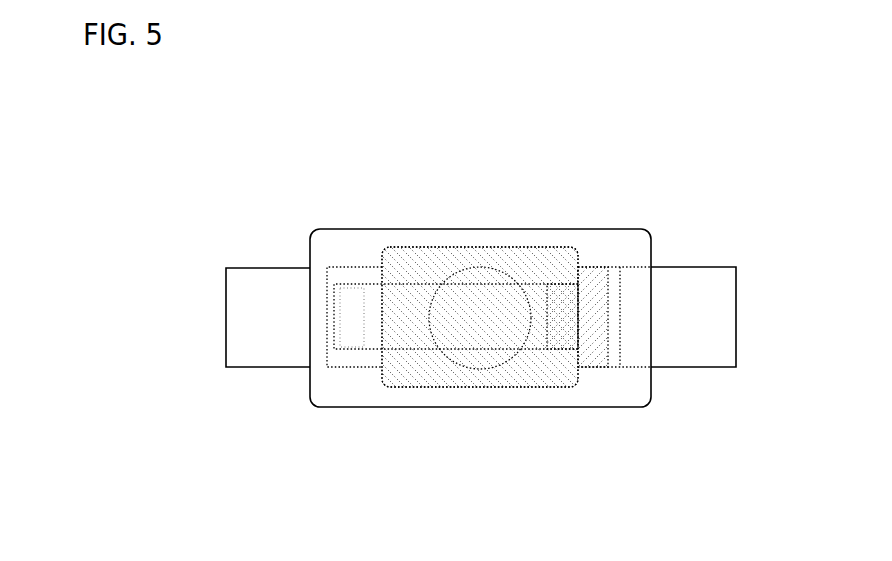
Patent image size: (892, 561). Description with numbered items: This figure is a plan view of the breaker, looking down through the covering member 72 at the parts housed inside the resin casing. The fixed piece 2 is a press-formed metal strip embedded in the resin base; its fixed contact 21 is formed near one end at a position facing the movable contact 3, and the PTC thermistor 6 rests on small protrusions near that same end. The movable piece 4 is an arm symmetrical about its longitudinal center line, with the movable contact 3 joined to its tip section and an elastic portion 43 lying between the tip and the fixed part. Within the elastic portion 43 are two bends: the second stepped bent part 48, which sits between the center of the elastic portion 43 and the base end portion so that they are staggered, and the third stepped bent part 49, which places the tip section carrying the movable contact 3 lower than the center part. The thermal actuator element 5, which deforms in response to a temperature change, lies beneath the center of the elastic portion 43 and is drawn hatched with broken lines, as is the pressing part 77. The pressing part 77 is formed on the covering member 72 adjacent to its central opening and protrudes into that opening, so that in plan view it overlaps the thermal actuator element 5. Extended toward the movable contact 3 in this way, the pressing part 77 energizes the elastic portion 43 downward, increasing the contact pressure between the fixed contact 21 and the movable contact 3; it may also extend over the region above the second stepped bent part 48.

The fixed piece 2 is at (290, 355).
The movable contact 3 is at (358, 267).
The movable piece 4 is at (672, 280).
The thermal actuator element 5 is at (547, 250).
The PTC thermistor 6 is at (478, 247).
The fixed contact 21 is at (352, 367).
The elastic portion 43 is at (478, 370).
The second stepped bent part 48 is at (538, 349).
The third stepped bent part 49 is at (418, 387).
The covering member 72 is at (618, 393).
The pressing part 77 is at (590, 267).